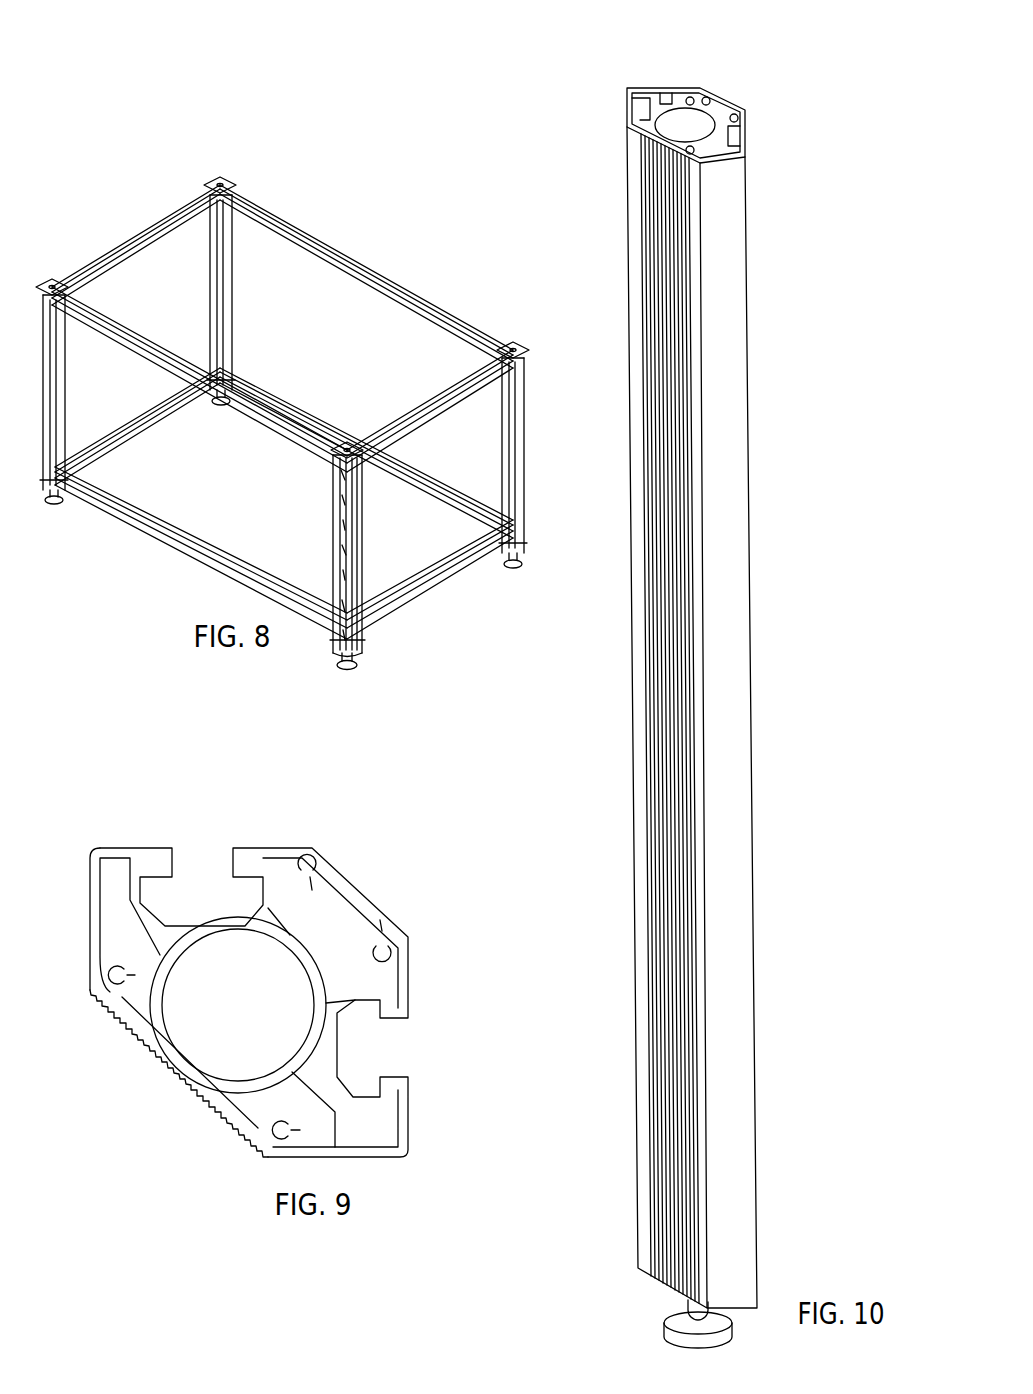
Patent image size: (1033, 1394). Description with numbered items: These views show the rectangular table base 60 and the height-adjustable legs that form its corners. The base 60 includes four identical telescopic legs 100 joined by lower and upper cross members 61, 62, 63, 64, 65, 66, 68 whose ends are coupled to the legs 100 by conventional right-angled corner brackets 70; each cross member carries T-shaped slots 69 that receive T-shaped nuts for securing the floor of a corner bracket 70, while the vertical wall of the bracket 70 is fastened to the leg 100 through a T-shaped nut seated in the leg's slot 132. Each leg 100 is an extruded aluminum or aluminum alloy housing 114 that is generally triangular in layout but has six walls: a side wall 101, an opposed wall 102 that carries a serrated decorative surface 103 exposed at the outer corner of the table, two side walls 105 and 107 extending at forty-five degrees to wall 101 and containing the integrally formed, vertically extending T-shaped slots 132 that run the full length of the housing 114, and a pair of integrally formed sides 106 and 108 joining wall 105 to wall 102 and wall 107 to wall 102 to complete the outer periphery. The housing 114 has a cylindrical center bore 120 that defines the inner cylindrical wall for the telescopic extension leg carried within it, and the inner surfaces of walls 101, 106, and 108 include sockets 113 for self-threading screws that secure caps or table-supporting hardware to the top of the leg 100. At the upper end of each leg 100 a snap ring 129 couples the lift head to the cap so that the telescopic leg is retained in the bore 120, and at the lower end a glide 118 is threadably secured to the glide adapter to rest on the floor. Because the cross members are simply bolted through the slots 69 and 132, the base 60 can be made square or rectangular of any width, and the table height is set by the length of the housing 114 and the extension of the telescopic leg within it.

In FIG. 8, the table base 60 is at (352, 205).
In FIG. 8, the cross member 61 is at (113, 440).
In FIG. 8, the cross member 62 is at (276, 383).
In FIG. 8, the cross member 63 is at (455, 585).
In FIG. 8, the cross member 64 is at (108, 518).
In FIG. 8, the cross member 65 is at (178, 204).
In FIG. 8, the cross member 66 is at (393, 275).
In FIG. 8, the cross member 68 is at (253, 423).
In FIG. 8, the T-shaped slot 69 is at (112, 250).
In FIG. 8, the corner bracket 70 is at (207, 227).
In FIG. 8, the telescopic leg 100 is at (245, 246).
In FIG. 9, the telescopic leg 100 is at (260, 979).
In FIG. 10, the telescopic leg 100 is at (670, 691).
In FIG. 9, the side wall 101 is at (392, 920).
In FIG. 10, the side wall 101 is at (722, 100).
In FIG. 8, the wall 102 is at (356, 535).
In FIG. 9, the wall 102 is at (102, 997).
In FIG. 10, the wall 102 is at (703, 292).
In FIG. 8, the serrated decorative surface 103 is at (343, 500).
In FIG. 9, the serrated decorative surface 103 is at (208, 1100).
In FIG. 10, the serrated decorative surface 103 is at (652, 776).
In FIG. 9, the side wall 105 is at (262, 847).
In FIG. 9, the side 106 is at (90, 912).
In FIG. 10, the side 106 is at (627, 107).
In FIG. 9, the side wall 107 is at (410, 968).
In FIG. 8, the side 108 is at (362, 573).
In FIG. 9, the side 108 is at (380, 1160).
In FIG. 10, the side 108 is at (746, 231).
In FIG. 9, the socket 113 is at (120, 970).
In FIG. 10, the socket 113 is at (698, 94).
In FIG. 9, the extruded housing 114 is at (125, 848).
In FIG. 10, the extruded housing 114 is at (628, 91).
In FIG. 8, the glide 118 is at (214, 405).
In FIG. 10, the glide 118 is at (672, 1316).
In FIG. 9, the cylindrical center bore 120 is at (195, 960).
In FIG. 10, the cylindrical center bore 120 is at (678, 128).
In FIG. 8, the snap ring 129 is at (226, 180).
In FIG. 9, the T-shaped slot 132 is at (163, 903).
In FIG. 10, the T-shaped slot 132 is at (665, 92).